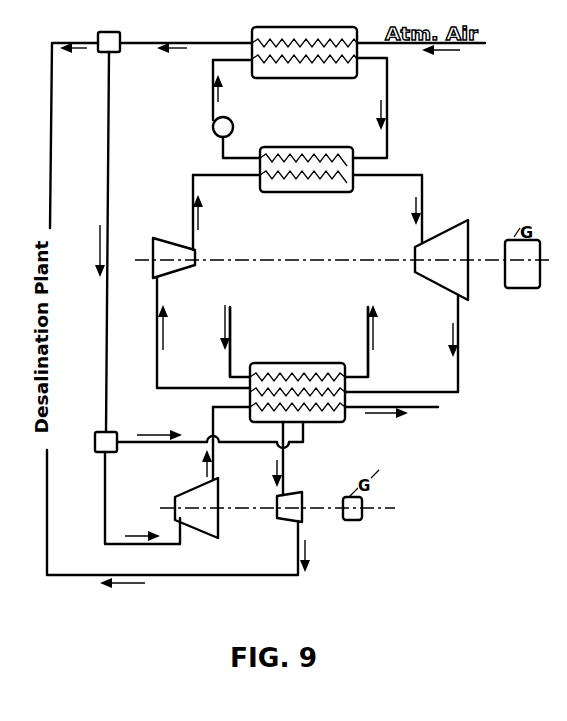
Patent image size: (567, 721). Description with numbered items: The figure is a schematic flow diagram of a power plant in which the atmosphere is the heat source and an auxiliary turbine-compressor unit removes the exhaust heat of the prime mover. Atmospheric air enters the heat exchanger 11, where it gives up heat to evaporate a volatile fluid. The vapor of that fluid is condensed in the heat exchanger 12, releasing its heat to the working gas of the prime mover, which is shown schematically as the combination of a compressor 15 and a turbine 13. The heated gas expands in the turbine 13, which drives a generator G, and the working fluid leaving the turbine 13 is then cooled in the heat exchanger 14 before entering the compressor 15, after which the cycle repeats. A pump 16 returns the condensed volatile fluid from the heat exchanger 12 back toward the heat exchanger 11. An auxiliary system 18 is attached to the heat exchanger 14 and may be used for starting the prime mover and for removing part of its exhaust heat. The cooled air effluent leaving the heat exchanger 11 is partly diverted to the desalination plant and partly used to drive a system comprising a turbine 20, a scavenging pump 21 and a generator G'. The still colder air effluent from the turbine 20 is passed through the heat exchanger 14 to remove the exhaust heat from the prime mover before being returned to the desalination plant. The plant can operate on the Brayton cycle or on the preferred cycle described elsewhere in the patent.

The heat exchanger 11 is at (283, 27).
The heat exchanger 12 is at (288, 147).
The turbine 13 is at (414, 247).
The heat exchanger 14 is at (290, 363).
The compressor 15 is at (197, 257).
The pump 16 is at (212, 132).
The auxiliary system 18 is at (368, 321).
The turbine 20 is at (186, 493).
The scavenging pump 21 is at (285, 523).